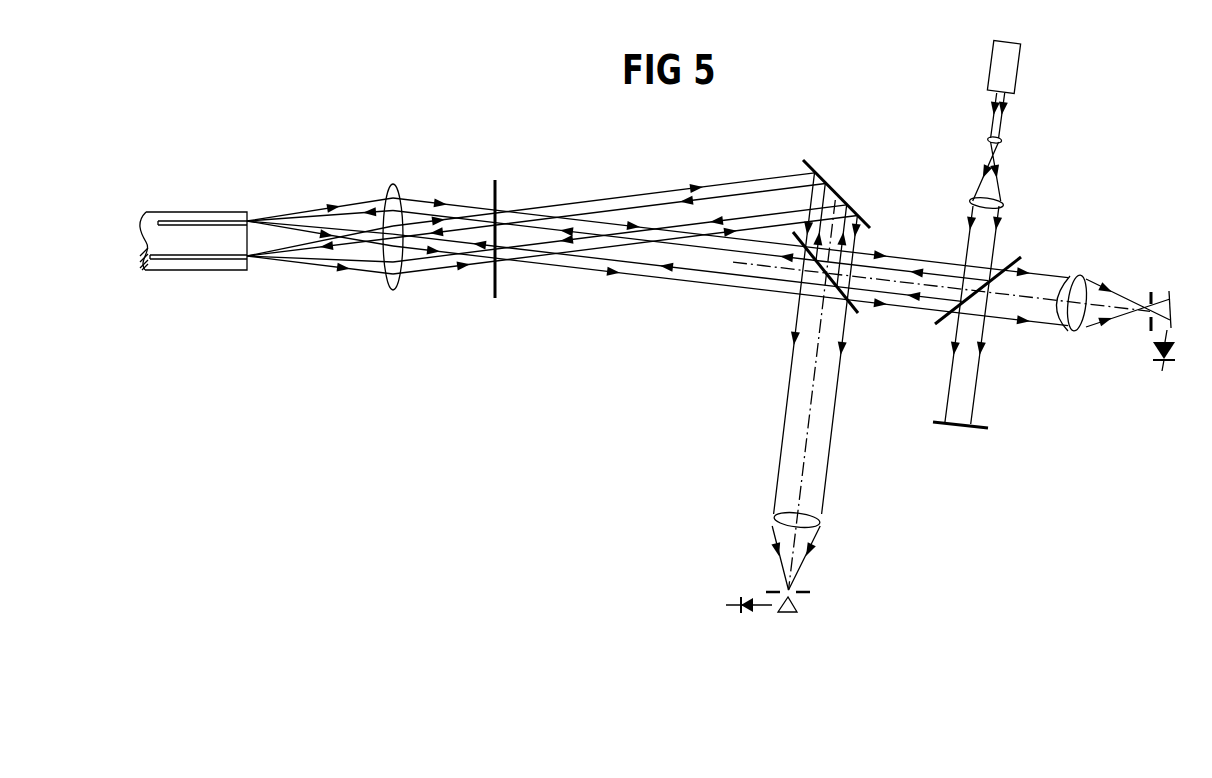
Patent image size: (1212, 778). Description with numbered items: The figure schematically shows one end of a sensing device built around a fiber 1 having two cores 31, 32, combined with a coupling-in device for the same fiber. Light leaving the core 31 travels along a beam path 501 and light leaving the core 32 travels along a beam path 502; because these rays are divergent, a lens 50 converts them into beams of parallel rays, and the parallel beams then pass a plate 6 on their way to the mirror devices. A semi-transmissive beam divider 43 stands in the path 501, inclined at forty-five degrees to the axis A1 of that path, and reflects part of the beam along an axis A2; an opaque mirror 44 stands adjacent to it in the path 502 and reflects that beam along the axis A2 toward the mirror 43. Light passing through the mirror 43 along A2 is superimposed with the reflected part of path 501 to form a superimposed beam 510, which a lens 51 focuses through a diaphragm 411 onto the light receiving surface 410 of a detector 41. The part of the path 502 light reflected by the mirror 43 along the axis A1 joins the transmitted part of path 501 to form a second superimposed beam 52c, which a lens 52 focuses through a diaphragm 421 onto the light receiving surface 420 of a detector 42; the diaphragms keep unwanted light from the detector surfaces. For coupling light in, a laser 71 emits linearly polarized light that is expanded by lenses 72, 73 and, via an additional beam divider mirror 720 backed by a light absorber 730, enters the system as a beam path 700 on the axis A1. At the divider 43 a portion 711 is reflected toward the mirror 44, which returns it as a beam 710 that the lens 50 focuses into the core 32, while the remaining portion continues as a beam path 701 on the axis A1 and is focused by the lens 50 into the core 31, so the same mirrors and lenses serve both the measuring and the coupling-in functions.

The fiber 1 is at (178, 212).
The core 31 is at (160, 212).
The core 32 is at (174, 260).
The lens 50 is at (397, 188).
The filter plate 6 is at (497, 182).
The beam path 502 is at (725, 232).
The beam 710 is at (747, 218).
The portion 711 is at (853, 203).
The mirror 44 is at (831, 188).
The beam path 700 is at (927, 268).
The beam path 701 is at (693, 271).
The beam path 501 is at (780, 292).
The beam divider device 43 is at (858, 314).
The axis A1 is at (941, 308).
The axis A2 is at (812, 396).
The superimposed beam 510 is at (783, 437).
The lens 51 is at (817, 523).
The diaphragm 411 is at (803, 592).
The light receiving surface 410 is at (788, 613).
The detector 41 is at (743, 613).
The laser 71 is at (1007, 73).
The lens 72 is at (997, 140).
The lens 73 is at (1000, 204).
The additional beam divider mirror 720 is at (1016, 258).
The light absorber 730 is at (965, 428).
The lens 52 is at (1084, 273).
The superimposed beam 52c is at (1068, 276).
The light receiving surface 420 is at (1157, 286).
The diaphragm 421 is at (1148, 327).
The detector 42 is at (1172, 362).